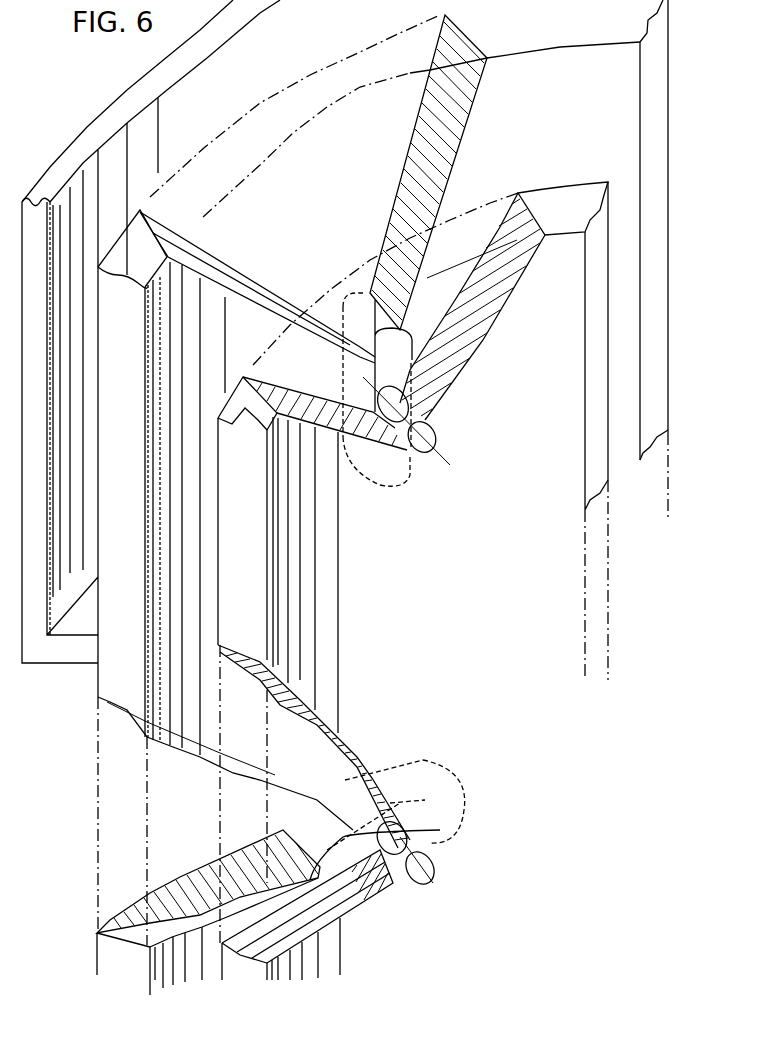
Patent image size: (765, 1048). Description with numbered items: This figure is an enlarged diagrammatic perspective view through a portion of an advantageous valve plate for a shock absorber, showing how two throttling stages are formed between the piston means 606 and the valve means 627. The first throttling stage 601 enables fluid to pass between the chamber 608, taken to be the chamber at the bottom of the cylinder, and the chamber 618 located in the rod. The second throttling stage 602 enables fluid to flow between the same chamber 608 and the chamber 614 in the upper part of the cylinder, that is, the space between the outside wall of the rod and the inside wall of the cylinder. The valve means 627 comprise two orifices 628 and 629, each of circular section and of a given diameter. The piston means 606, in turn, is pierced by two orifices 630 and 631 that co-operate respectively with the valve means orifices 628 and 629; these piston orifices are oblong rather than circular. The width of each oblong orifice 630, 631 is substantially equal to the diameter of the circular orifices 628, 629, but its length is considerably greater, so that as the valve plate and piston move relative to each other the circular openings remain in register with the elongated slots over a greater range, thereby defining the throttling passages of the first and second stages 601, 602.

The first throttling stage 601 is at (423, 455).
The second throttling stage 602 is at (440, 849).
The piston means 606 is at (648, 137).
The chamber 608 is at (525, 690).
The chamber 614 is at (75, 803).
The chamber 618 is at (340, 190).
The valve means 627 is at (504, 431).
The orifice 628 is at (433, 433).
The orifice 629 is at (433, 880).
The orifice 630 is at (390, 357).
The orifice 631 is at (360, 850).